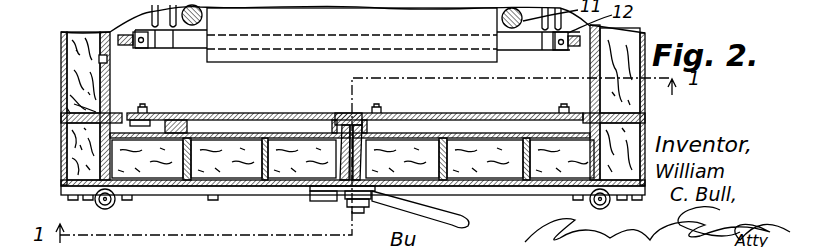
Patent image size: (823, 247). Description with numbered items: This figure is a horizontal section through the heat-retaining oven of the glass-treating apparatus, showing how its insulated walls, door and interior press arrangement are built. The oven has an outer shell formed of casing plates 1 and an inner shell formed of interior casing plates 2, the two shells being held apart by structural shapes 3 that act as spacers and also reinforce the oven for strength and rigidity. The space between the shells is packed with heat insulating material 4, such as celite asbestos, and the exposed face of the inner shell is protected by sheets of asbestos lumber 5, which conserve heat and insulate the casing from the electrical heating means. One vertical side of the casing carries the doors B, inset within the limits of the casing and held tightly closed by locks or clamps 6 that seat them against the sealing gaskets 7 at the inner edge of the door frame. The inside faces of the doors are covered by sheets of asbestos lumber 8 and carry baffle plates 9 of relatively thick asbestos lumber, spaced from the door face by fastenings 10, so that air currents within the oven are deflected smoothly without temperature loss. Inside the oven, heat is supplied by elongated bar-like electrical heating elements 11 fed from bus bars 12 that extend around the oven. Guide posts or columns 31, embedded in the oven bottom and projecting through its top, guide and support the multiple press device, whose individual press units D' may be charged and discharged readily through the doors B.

The casing plates 1 is at (64, 72).
The interior casing plates 2 is at (108, 64).
The structural shapes 3 is at (80, 106).
The heat insulating material 4 is at (76, 43).
The sheets of asbestos lumber 5 is at (108, 104).
The locks or clamps 6 is at (102, 59).
The sealing gaskets 7 is at (70, 130).
The sheets of asbestos lumber 8 is at (207, 125).
The baffle plates 9 is at (188, 124).
The fastenings 10 is at (164, 117).
The electrical heating elements 11 is at (155, 18).
The bus bars 12 is at (163, 48).
The guide posts or columns 31 is at (204, 18).
The doors B is at (260, 194).
The press units D' is at (350, 34).